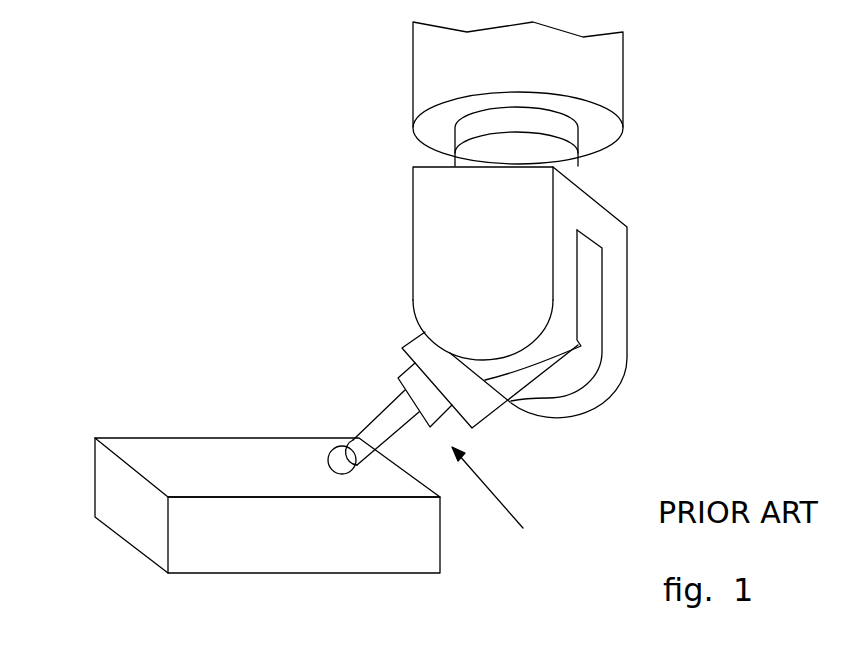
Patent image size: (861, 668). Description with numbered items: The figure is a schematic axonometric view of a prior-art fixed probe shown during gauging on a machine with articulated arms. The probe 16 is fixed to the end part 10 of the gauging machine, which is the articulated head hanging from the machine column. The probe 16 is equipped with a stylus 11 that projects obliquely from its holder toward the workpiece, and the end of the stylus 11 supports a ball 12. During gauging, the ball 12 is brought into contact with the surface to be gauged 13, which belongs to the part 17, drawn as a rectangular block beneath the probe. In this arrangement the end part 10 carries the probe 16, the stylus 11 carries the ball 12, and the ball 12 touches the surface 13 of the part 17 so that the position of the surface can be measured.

The end part 10 is at (428, 358).
The stylus 11 is at (388, 427).
The ball 12 is at (343, 460).
The surface to be gauged 13 is at (245, 465).
The probe 16 is at (507, 503).
The part 17 is at (127, 498).